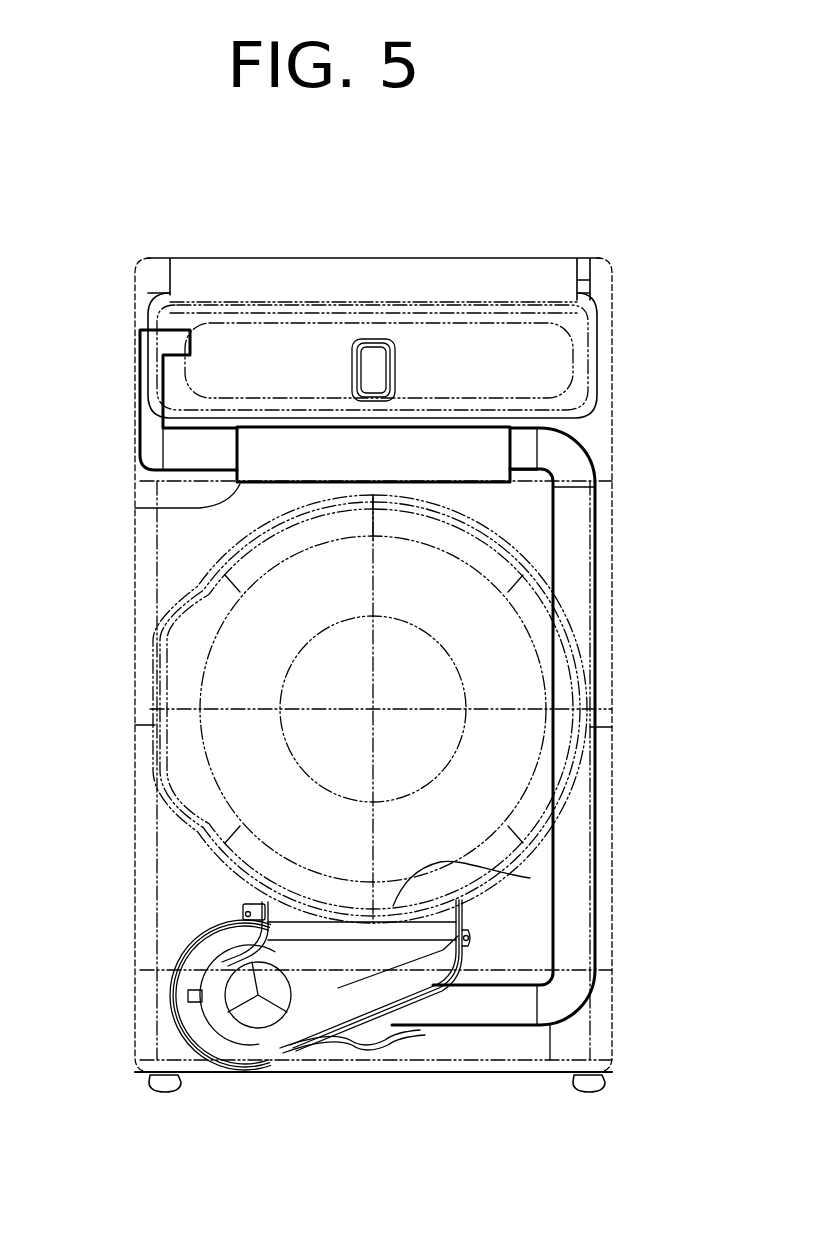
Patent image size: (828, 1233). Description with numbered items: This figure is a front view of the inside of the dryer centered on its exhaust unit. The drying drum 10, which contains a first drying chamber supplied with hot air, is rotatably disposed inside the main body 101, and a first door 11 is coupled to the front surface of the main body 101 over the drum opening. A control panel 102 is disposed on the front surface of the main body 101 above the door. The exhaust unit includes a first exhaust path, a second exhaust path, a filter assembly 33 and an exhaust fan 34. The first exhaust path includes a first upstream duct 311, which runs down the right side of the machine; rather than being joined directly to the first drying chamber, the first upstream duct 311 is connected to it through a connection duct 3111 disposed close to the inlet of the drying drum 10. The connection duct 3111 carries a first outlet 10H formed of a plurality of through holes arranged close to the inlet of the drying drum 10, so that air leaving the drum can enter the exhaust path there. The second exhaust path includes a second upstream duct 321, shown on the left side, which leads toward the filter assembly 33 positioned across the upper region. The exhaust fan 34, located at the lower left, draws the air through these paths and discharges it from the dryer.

The main body 101 is at (603, 268).
The control panel 102 is at (605, 338).
The second upstream duct 321 is at (150, 420).
The filter assembly 33 is at (262, 467).
The first upstream duct 311 is at (597, 563).
The drying drum 10 is at (190, 867).
The first door 11 is at (180, 690).
The first outlet 10H is at (530, 878).
The connection duct 3111 is at (237, 922).
The exhaust fan 34 is at (178, 997).